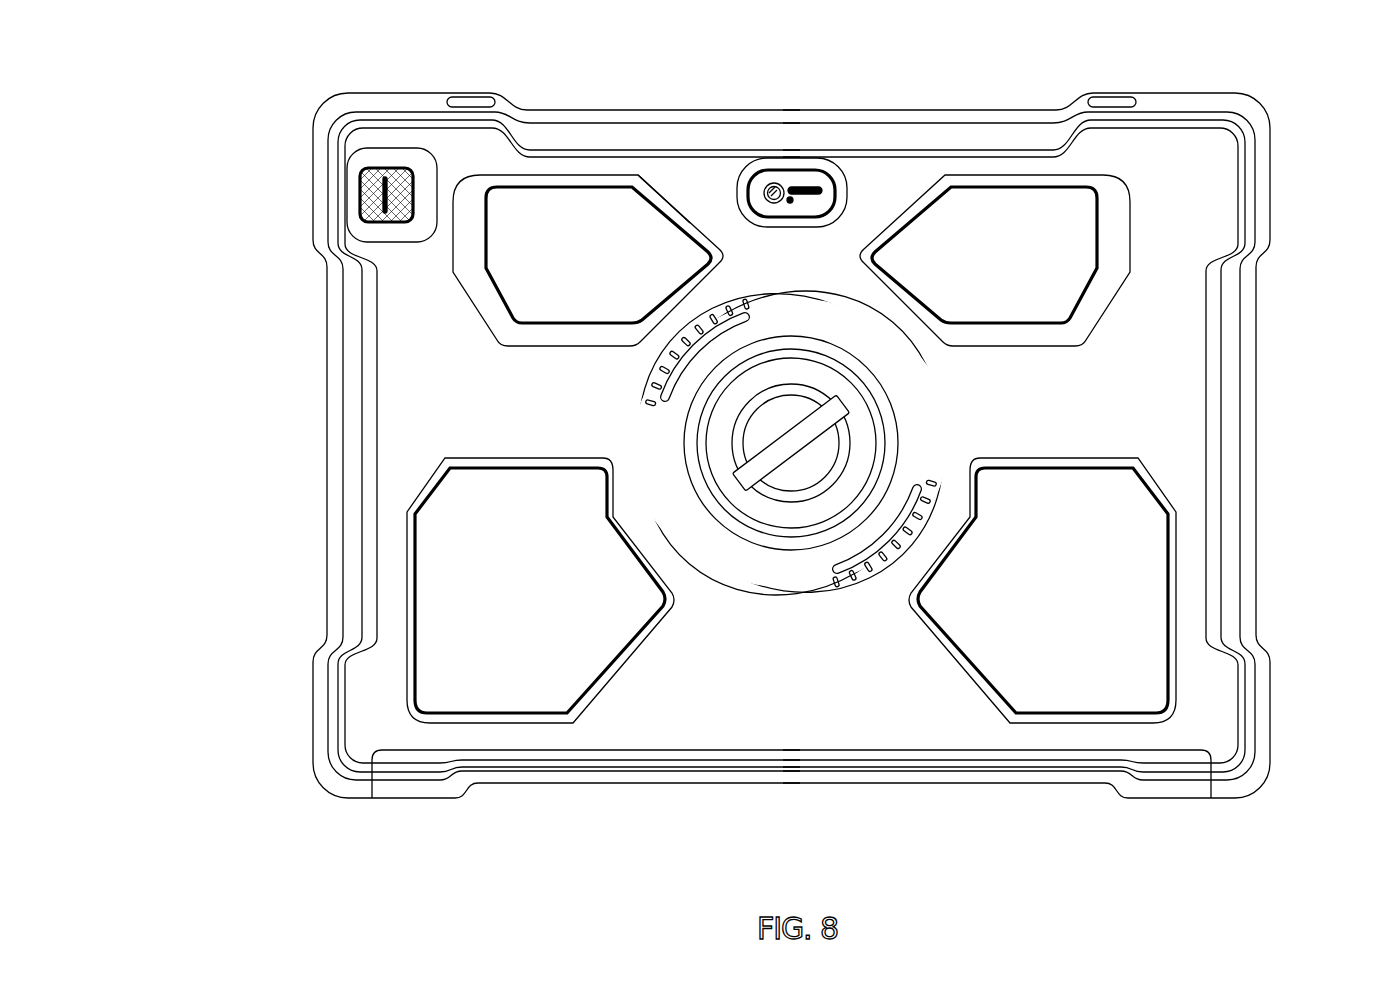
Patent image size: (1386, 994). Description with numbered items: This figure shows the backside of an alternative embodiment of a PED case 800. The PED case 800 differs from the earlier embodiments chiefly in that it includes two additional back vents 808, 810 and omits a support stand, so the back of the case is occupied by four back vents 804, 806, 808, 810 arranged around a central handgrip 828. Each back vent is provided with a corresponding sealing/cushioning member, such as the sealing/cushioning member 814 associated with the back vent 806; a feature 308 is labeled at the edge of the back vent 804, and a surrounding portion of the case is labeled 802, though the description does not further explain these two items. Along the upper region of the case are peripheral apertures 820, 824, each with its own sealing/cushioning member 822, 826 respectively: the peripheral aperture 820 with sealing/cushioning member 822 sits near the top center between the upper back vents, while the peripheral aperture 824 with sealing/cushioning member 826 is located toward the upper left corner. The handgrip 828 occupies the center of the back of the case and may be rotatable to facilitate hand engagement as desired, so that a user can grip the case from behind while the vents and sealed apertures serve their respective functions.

The PED case 800 is at (178, 73).
The case housing 802 is at (650, 116).
The back vent 804 is at (610, 266).
The back vent 806 is at (1020, 266).
The back vent 808 is at (538, 612).
The back vent 810 is at (1088, 612).
The pad edge 308 is at (664, 196).
The sealing/cushioning member 814 is at (1026, 213).
The peripheral aperture 820 is at (803, 177).
The sealing/cushioning member 822 is at (772, 215).
The peripheral aperture 824 is at (383, 200).
The sealing/cushioning member 826 is at (378, 222).
The handgrip 828 is at (921, 453).